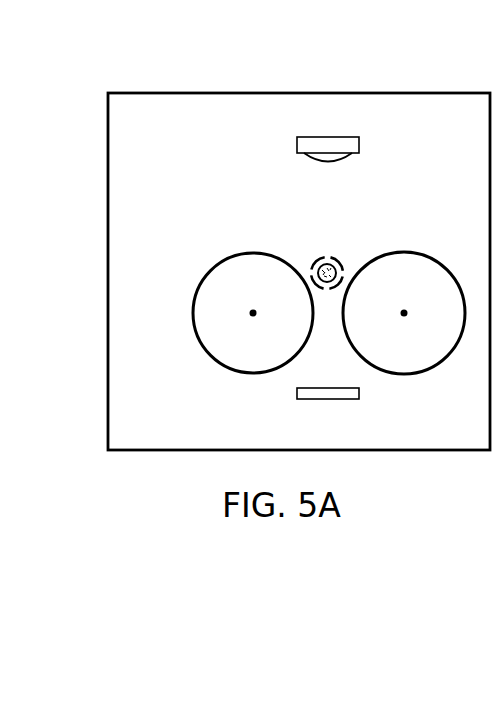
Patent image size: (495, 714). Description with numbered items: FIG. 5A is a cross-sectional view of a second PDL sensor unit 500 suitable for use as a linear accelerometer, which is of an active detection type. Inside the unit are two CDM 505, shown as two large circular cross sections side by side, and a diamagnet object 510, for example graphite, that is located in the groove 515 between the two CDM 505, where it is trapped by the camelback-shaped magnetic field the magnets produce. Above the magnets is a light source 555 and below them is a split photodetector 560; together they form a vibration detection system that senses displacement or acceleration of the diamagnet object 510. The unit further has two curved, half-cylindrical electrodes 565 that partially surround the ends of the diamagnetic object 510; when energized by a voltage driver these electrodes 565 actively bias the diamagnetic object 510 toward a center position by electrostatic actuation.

The second PDL sensor unit 500 is at (218, 137).
The CDM 505 is at (221, 261).
The diamagnet object 510 is at (337, 259).
The groove 515 is at (342, 355).
The light source 555 is at (328, 145).
The split photodetector 560 is at (313, 395).
The curved electrode 565 is at (317, 258).